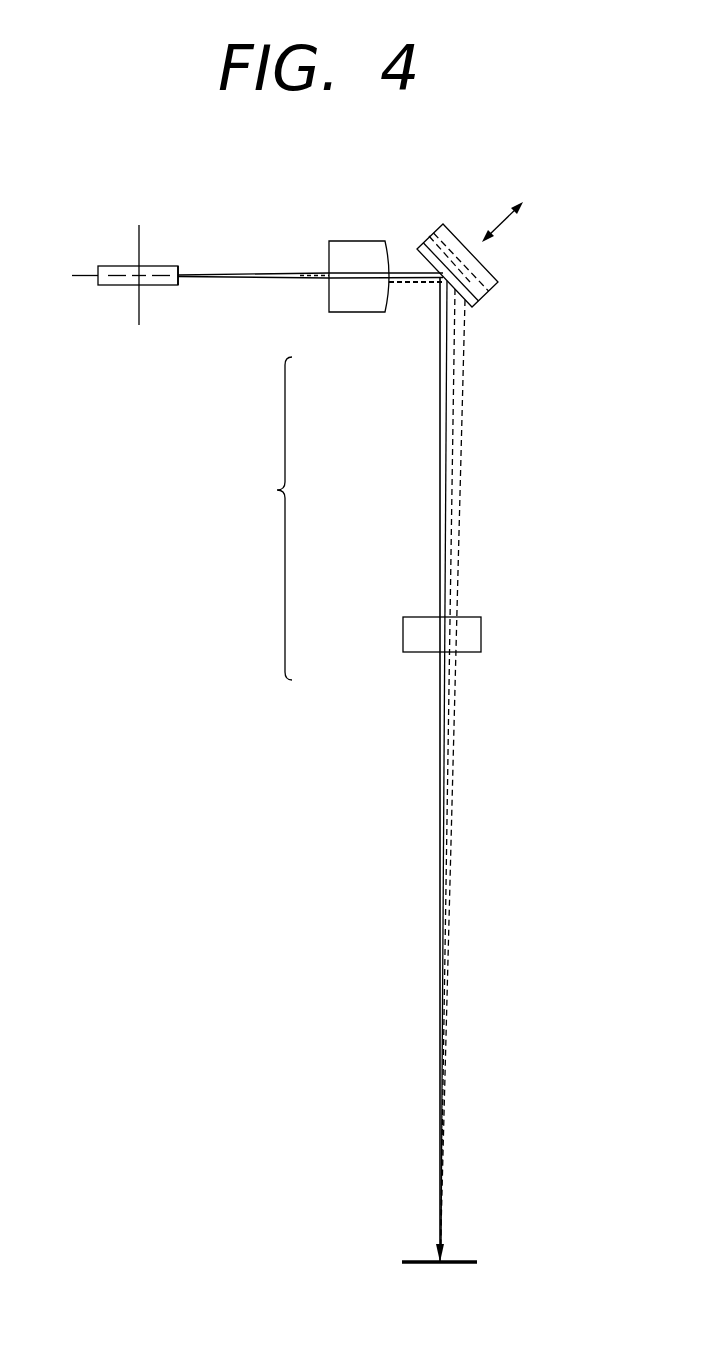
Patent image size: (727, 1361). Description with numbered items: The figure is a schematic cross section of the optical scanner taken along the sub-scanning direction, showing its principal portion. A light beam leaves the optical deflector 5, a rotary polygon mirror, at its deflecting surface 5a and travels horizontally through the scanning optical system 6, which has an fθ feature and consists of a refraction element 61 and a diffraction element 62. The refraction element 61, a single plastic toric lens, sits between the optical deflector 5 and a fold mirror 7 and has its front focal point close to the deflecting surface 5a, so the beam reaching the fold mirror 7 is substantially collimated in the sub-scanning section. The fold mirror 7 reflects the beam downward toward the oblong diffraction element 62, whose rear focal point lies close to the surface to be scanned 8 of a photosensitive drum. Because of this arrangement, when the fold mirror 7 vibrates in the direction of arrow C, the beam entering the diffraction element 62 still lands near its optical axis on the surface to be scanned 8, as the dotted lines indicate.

The optical deflector 5 is at (118, 285).
The deflecting surface 5a is at (178, 285).
The scanning optical system 6 is at (272, 518).
The refraction element 61 is at (350, 312).
The diffraction element 62 is at (403, 633).
The fold mirror 7 is at (436, 233).
The direction of primary oscillation C is at (503, 223).
The surface to be scanned 8 is at (422, 1262).